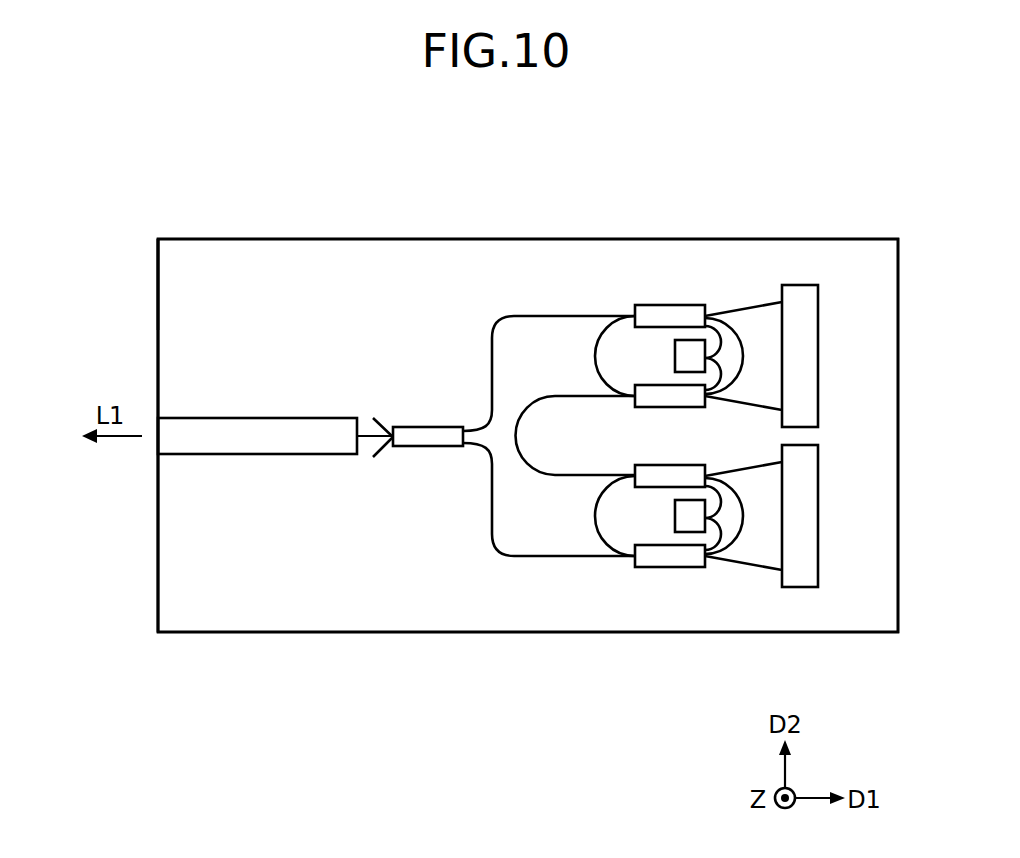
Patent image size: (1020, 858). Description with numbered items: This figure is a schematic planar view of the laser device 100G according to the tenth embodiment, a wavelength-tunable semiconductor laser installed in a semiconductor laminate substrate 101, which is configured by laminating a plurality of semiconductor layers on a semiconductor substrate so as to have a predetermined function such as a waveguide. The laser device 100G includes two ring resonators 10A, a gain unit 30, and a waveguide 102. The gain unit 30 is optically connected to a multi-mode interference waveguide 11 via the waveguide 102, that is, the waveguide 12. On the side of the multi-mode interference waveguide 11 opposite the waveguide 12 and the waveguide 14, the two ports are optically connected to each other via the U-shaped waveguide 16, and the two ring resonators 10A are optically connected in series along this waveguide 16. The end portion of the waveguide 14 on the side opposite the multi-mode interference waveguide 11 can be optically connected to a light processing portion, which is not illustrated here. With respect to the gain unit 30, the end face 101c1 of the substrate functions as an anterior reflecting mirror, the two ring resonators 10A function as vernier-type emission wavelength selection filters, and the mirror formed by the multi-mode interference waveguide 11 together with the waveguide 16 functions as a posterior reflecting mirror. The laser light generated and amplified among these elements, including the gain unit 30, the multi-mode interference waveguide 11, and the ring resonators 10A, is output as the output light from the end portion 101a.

The laser device 100G is at (855, 232).
The semiconductor laminate substrate 101 is at (865, 583).
The end portion 101a is at (158, 436).
The end face 101c1 is at (158, 253).
The gain unit 30 is at (258, 418).
The waveguide 14 is at (385, 417).
The multi-mode interference waveguide 11 is at (429, 426).
The waveguide 102 is at (456, 525).
The waveguide 12 is at (456, 525).
The U-shaped waveguide 16 is at (549, 589).
The ring resonator 10A is at (719, 278).